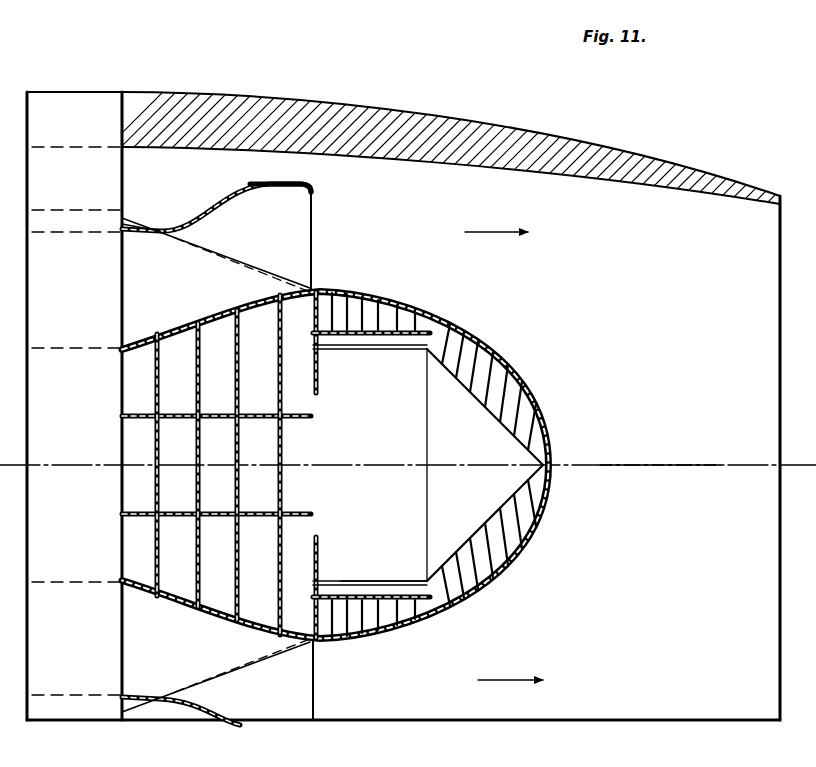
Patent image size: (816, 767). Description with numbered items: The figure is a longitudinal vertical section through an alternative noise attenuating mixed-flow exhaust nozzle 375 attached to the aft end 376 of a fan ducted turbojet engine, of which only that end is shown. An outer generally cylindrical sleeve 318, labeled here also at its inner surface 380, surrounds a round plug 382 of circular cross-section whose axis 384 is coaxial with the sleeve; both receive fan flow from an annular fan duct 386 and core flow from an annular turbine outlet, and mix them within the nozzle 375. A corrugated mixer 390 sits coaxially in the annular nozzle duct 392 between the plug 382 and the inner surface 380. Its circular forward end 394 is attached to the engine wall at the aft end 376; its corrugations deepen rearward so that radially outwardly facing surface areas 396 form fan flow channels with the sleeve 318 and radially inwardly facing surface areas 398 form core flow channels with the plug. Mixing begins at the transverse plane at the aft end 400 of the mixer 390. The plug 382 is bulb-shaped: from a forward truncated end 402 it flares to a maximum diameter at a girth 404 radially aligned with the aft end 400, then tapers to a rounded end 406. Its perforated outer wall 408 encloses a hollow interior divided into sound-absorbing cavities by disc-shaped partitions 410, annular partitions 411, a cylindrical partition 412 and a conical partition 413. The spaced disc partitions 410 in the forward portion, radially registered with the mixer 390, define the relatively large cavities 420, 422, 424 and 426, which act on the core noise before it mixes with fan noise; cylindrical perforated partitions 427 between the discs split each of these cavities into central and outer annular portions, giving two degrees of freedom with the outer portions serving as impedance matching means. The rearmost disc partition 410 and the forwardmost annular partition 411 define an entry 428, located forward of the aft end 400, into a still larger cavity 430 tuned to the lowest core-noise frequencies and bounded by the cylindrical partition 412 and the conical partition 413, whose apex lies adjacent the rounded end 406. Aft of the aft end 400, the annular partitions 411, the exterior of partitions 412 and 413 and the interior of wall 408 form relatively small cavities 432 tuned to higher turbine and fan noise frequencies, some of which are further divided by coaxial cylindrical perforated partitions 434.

The mixed-flow exhaust nozzle 375 is at (548, 105).
The aft end of engine 376 is at (76, 76).
The outer nacelle wall 318 is at (474, 118).
The inner surface of sleeve 380 is at (484, 165).
The round plug 382 is at (443, 307).
The axis 384 is at (662, 462).
The annular fan duct 386 is at (88, 193).
The corrugated mixer 390 is at (237, 197).
The annular nozzle duct 392 is at (410, 216).
The forward end of mixer 394 is at (147, 201).
The radially outwardly facing surface areas 396 is at (205, 240).
The radially inwardly facing surface areas 398 is at (265, 190).
The aft end of mixer 400 is at (312, 193).
The forward truncated end of plug 402 is at (126, 345).
The girth 404 is at (314, 292).
The rounded end 406 is at (556, 465).
The outer wall of plug 408 is at (516, 375).
The disc-shaped partitions 410 is at (235, 598).
The annular-shaped partitions 411 is at (498, 562).
The cylindrical partition 412 is at (373, 580).
The conical partition 413 is at (477, 528).
The sound-absorbing cavity 420 is at (153, 455).
The sound-absorbing cavity 422 is at (192, 455).
The sound-absorbing cavity 424 is at (231, 455).
The sound-absorbing cavity 426 is at (271, 455).
The cylindrical perforated partitions 427 is at (216, 413).
The entry 428 is at (305, 325).
The sound-absorbing cavity 430 is at (388, 442).
The cavities 432 is at (372, 301).
The cylindrical perforated partitions 434 is at (372, 351).